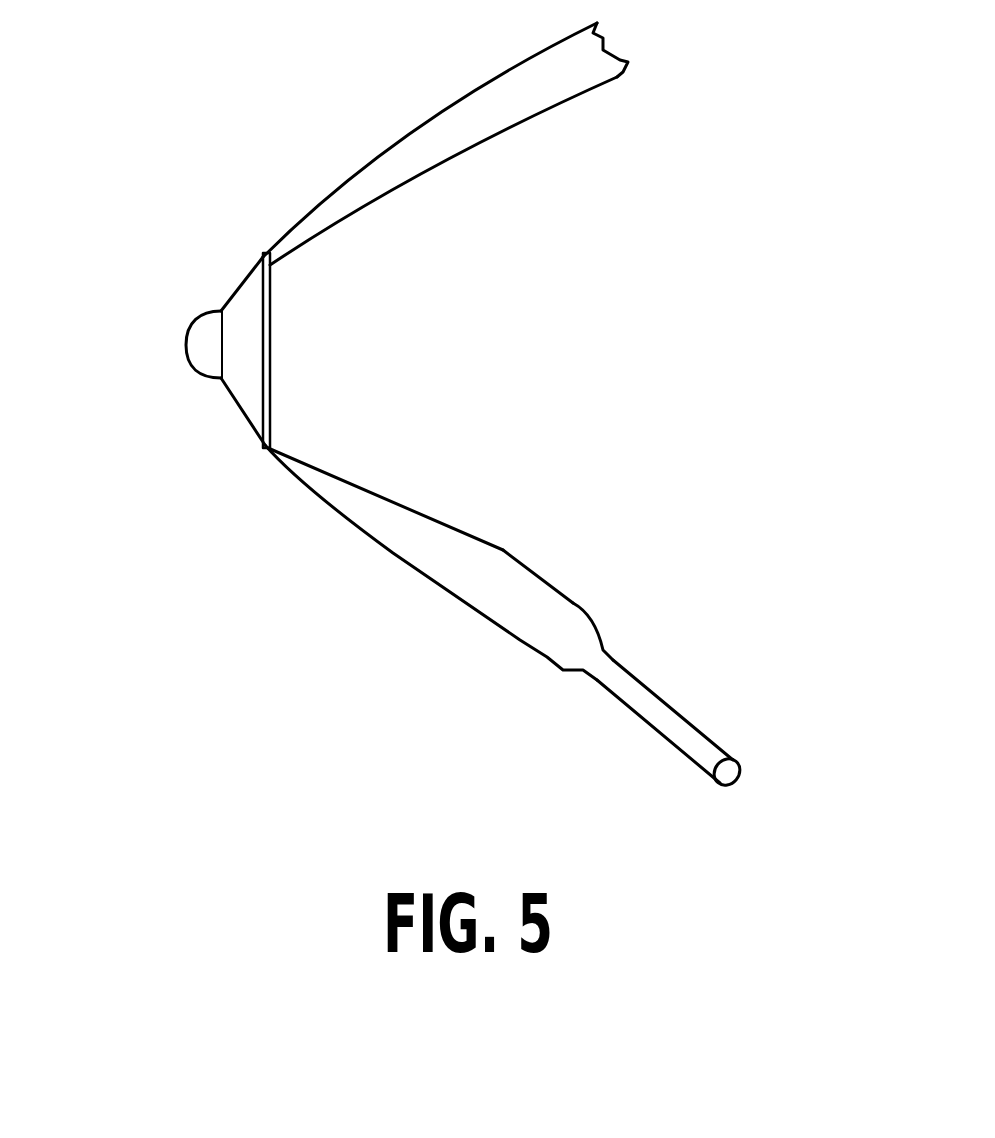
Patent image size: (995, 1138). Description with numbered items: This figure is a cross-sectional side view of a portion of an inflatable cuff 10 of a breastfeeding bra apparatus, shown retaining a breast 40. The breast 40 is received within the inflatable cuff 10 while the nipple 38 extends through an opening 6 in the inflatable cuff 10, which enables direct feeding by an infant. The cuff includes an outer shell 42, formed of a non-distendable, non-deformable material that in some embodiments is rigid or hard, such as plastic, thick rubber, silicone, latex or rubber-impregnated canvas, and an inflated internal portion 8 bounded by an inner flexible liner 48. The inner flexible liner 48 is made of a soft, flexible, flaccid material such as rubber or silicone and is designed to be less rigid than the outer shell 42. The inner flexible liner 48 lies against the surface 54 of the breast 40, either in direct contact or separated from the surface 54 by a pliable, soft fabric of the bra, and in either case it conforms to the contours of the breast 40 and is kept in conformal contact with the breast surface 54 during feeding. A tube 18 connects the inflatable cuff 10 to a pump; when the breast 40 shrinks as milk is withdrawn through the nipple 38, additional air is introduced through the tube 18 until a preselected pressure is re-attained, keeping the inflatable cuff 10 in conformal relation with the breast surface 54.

The opening 6 is at (260, 257).
The inflated internal portion 8 is at (537, 88).
The inflatable cuff 10 is at (317, 497).
The tube 18 is at (664, 722).
The nipple 38 is at (187, 348).
The breast 40 is at (500, 355).
The outer shell 42 is at (453, 97).
The inner flexible liner 48 is at (503, 550).
The breast surface 54 is at (387, 500).